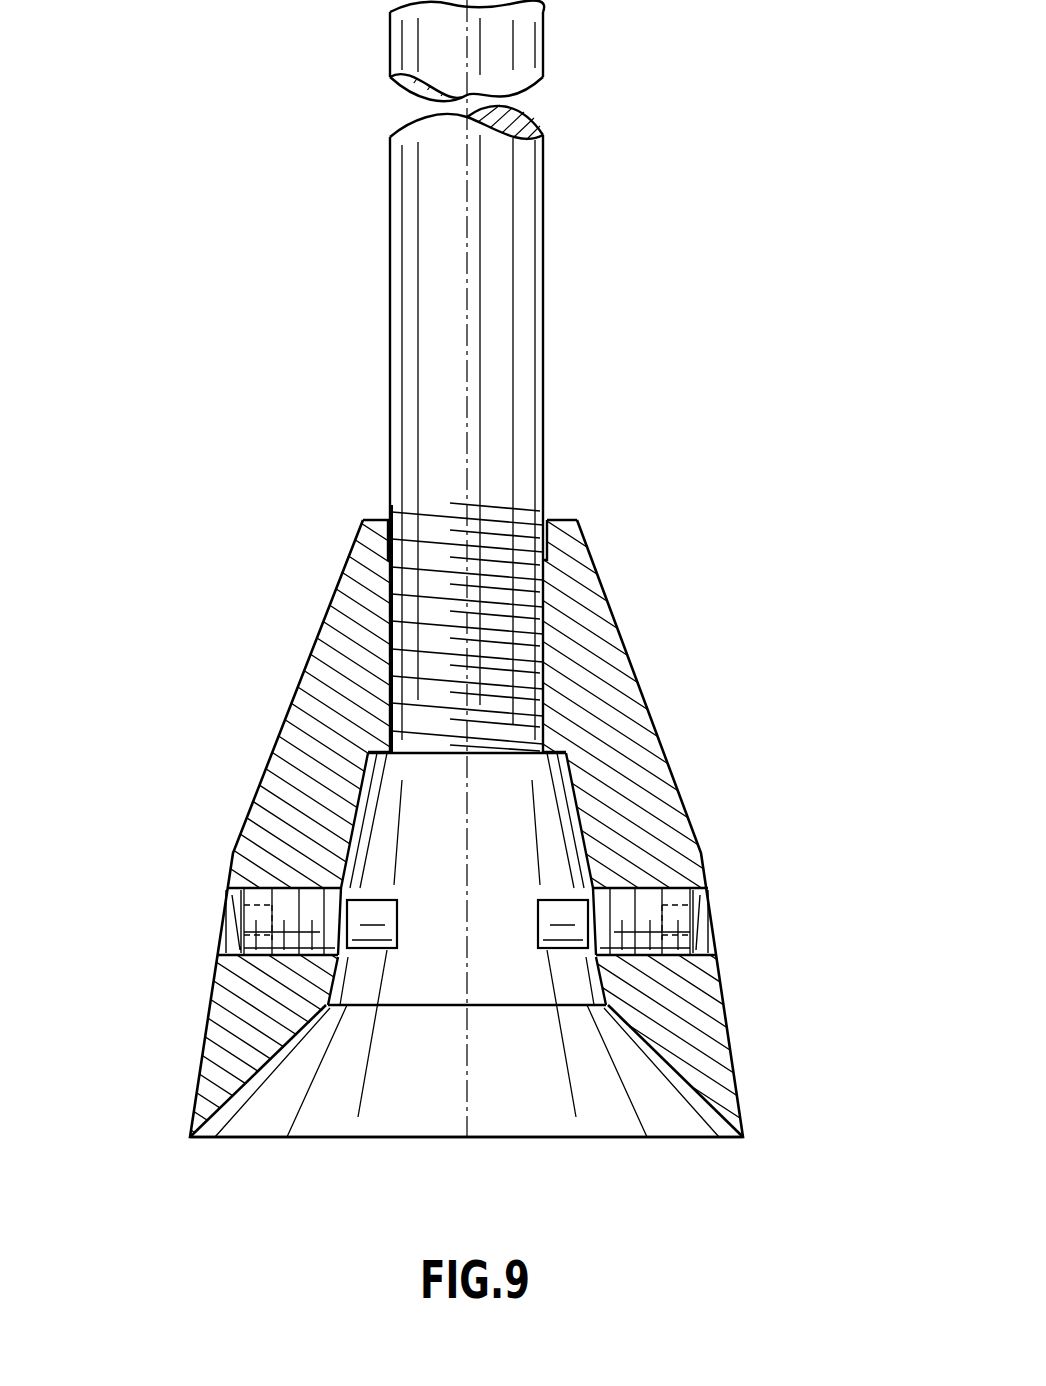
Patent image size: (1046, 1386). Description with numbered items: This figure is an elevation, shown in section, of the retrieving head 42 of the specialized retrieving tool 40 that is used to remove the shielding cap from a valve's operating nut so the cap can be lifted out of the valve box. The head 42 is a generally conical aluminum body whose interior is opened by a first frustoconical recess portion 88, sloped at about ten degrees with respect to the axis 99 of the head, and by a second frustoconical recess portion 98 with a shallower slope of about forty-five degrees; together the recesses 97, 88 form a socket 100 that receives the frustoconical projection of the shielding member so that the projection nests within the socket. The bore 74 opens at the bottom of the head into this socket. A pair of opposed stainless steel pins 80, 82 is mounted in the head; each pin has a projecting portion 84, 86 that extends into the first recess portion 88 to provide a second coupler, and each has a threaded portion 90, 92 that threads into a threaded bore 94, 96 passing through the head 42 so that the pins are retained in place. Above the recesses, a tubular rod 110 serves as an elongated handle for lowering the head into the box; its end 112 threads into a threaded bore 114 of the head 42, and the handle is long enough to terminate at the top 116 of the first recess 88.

The retrieving tool 40 is at (344, 454).
The retrieving head 42 is at (270, 745).
The bore 74 is at (486, 928).
The pin 80 is at (386, 958).
The pin 82 is at (548, 962).
The projecting portion 84 is at (381, 905).
The projecting portion 86 is at (548, 907).
The first frustoconical recess portion 88 is at (547, 850).
The threaded portion 90 is at (272, 958).
The threaded portion 92 is at (664, 960).
The threaded bore 94 is at (242, 938).
The threaded bore 96 is at (716, 937).
The recess 97 is at (573, 1105).
The second frustoconical recess portion 98 is at (272, 1105).
The axis 99 is at (468, 203).
The socket 100 is at (434, 1110).
The tubular rod 110 is at (537, 358).
The end 112 is at (500, 612).
The threaded bore 114 is at (540, 690).
The top 116 is at (520, 758).